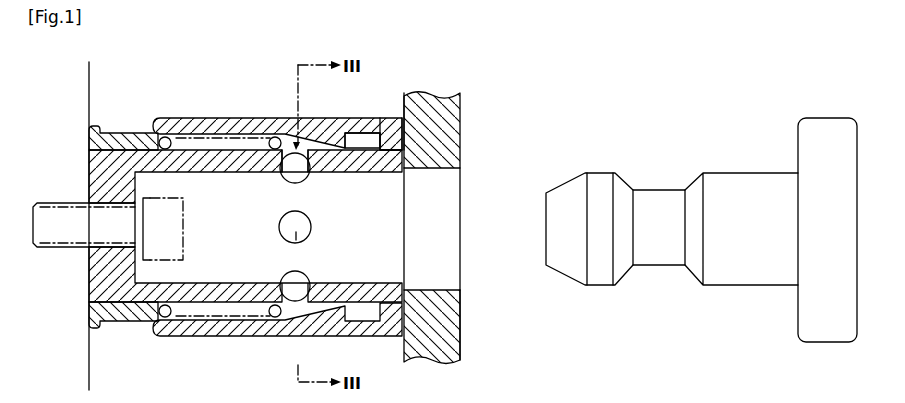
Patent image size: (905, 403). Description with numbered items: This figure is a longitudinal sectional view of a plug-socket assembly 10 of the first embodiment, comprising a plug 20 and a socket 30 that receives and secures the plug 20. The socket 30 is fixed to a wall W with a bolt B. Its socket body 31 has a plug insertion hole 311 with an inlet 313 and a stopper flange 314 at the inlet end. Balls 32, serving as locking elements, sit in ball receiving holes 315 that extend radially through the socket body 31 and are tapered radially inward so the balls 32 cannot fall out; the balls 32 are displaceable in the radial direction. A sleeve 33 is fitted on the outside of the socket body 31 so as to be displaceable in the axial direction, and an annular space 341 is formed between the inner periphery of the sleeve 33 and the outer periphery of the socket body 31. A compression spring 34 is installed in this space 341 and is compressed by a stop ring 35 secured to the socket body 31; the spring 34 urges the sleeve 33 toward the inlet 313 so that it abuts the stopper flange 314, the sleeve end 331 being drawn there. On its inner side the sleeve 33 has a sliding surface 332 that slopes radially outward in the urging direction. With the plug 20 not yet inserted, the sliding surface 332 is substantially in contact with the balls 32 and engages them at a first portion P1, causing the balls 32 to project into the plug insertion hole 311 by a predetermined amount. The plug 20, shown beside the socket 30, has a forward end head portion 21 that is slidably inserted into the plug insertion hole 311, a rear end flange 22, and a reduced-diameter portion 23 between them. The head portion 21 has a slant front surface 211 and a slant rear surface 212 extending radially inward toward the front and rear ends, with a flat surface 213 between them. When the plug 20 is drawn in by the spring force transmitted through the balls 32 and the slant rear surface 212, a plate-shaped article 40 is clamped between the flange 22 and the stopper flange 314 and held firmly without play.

The plug-socket assembly 10 is at (482, 103).
The plug 20 is at (692, 160).
The forward end head portion 21 is at (600, 160).
The slant front surface 211 is at (568, 192).
The slant rear surface 212 is at (630, 192).
The flat surface 213 is at (601, 255).
The rear end flange 22 is at (826, 118).
The reduced-diameter portion 23 is at (668, 190).
The socket 30 is at (152, 92).
The socket body 31 is at (89, 172).
The plug insertion hole 311 is at (392, 232).
The inlet 313 is at (405, 195).
The stopper flange 314 is at (392, 114).
The ball receiving holes 315 is at (282, 186).
The balls 32 is at (308, 186).
The sleeve 33 is at (229, 118).
The sleeve end flange 331 is at (370, 120).
The sliding surface 332 is at (343, 138).
The compression spring 34 is at (274, 137).
The annular space 341 is at (206, 137).
The stop ring 35 is at (95, 128).
The plate-shaped article 40 is at (462, 323).
The bolt B is at (40, 205).
The wall W is at (58, 190).
The first portion P1 is at (307, 107).